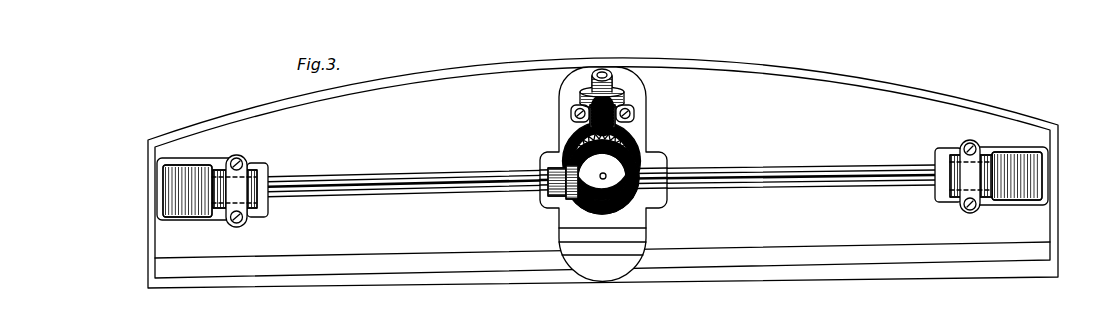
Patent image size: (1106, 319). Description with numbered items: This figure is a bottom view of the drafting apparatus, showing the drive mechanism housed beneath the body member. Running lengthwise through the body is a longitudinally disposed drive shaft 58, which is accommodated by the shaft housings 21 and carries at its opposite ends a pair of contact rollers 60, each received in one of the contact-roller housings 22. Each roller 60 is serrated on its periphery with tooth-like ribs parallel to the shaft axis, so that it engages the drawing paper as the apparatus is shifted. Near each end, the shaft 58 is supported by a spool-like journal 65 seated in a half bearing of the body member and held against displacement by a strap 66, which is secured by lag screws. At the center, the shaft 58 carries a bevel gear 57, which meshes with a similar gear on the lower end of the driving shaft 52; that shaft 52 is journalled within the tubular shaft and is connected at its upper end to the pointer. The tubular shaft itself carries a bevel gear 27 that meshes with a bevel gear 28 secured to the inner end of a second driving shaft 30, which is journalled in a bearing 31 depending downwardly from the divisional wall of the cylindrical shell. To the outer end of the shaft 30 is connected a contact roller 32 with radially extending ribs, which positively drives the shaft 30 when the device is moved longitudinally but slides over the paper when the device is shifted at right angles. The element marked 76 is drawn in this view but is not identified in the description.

The shaft housing 21 is at (421, 198).
The contact-roller housing 22 is at (1028, 105).
The bevel gear 27 is at (566, 134).
The bevel gear 28 is at (613, 131).
The driving shaft 30 is at (590, 69).
The bearing 31 is at (616, 118).
The contact roller 32 is at (622, 92).
The driving shaft 52 is at (603, 175).
The bevel gear 57 is at (564, 201).
The drive shaft 58 is at (597, 183).
The contact roller 60 is at (196, 208).
The spool-like journal 65 is at (619, 203).
The strap 66 is at (236, 223).
The housing 76 is at (640, 236).